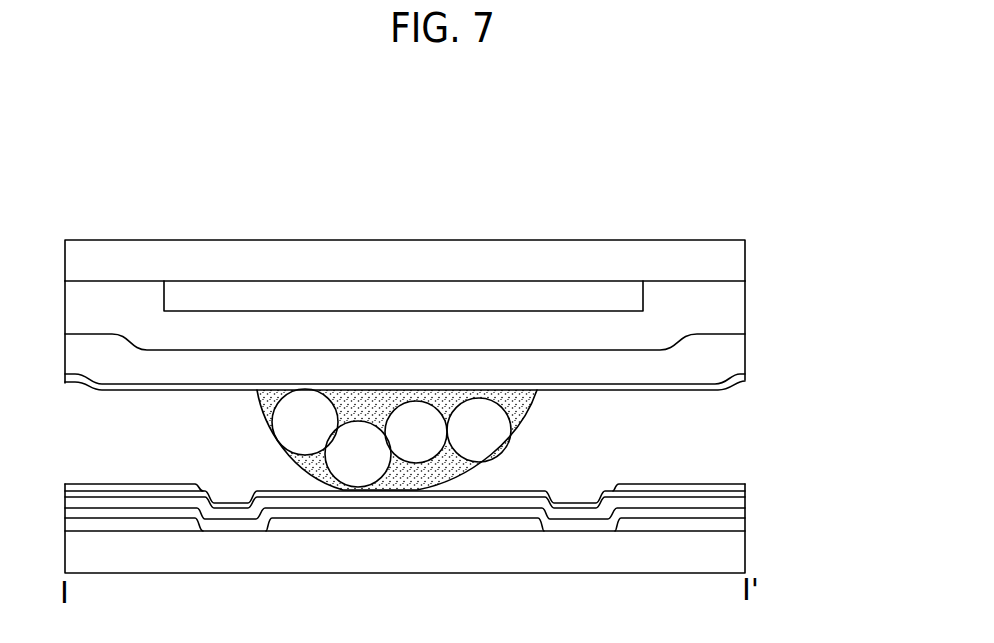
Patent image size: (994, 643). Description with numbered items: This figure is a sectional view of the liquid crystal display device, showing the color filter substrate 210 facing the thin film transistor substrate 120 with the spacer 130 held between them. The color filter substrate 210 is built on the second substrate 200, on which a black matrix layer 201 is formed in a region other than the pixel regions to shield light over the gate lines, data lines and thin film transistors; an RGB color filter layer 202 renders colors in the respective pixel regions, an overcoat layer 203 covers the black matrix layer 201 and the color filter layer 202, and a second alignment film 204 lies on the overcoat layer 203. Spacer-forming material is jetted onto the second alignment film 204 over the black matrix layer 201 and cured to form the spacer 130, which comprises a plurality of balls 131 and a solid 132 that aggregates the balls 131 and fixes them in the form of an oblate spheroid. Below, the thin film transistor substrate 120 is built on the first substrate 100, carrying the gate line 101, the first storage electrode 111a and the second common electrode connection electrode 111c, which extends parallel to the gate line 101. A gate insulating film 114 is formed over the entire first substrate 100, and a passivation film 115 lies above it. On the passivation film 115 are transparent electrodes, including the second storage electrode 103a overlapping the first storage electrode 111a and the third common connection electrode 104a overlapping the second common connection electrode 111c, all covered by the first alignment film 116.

The first substrate 100 is at (455, 550).
The gate line 101 is at (340, 528).
The first storage electrode 111a is at (140, 525).
The second common electrode connection electrode 111c is at (658, 525).
The gate insulating film 114 is at (743, 522).
The passivation film 115 is at (747, 503).
The first alignment film 116 is at (683, 485).
The second storage electrode 103a is at (107, 492).
The third common connection electrode 104a is at (740, 492).
The thin film transistor substrate 120 is at (810, 627).
The spacer 130 is at (332, 439).
The balls 131 is at (305, 413).
The solid 132 is at (303, 465).
The second substrate 200 is at (735, 263).
The black matrix layer 201 is at (423, 293).
The color filter layer 202 is at (735, 306).
The overcoat layer 203 is at (735, 349).
The second alignment film 204 is at (745, 381).
The color filter substrate 210 is at (830, 260).